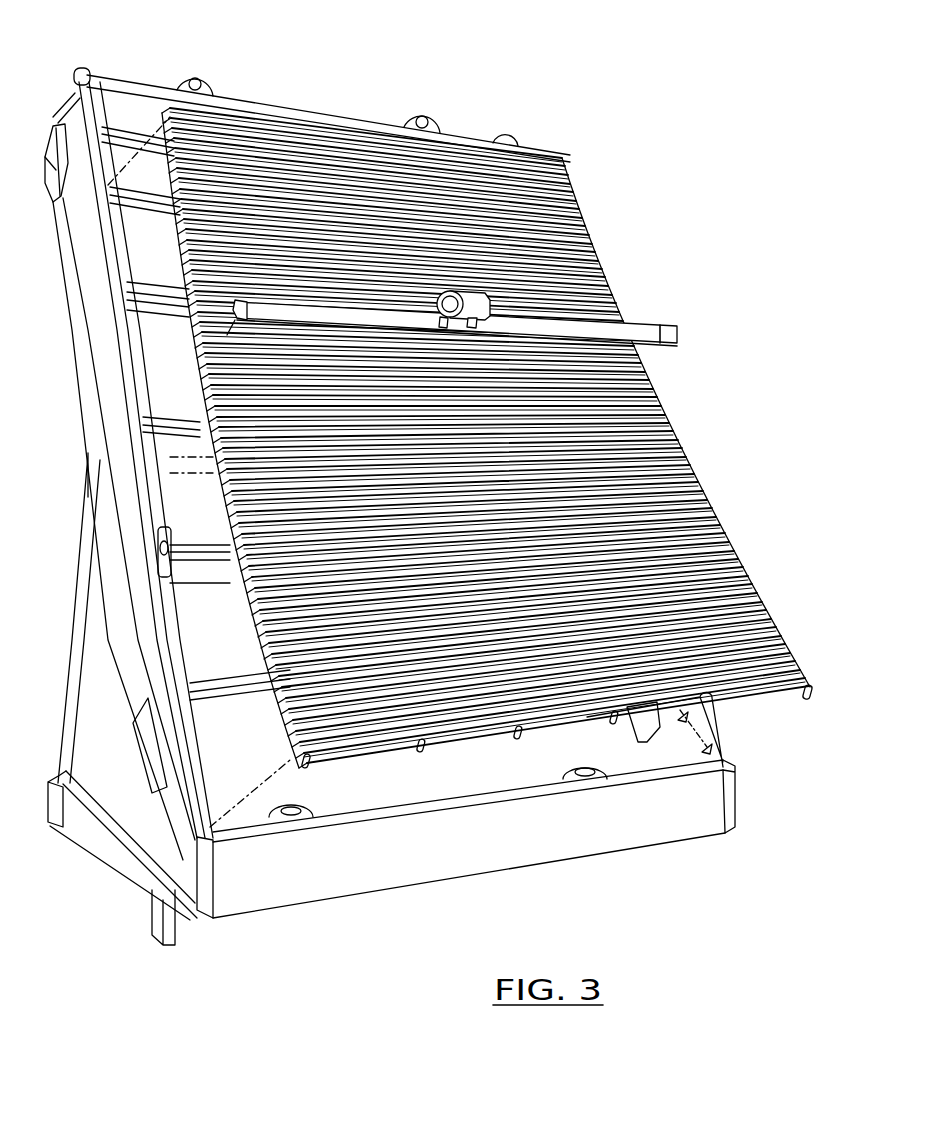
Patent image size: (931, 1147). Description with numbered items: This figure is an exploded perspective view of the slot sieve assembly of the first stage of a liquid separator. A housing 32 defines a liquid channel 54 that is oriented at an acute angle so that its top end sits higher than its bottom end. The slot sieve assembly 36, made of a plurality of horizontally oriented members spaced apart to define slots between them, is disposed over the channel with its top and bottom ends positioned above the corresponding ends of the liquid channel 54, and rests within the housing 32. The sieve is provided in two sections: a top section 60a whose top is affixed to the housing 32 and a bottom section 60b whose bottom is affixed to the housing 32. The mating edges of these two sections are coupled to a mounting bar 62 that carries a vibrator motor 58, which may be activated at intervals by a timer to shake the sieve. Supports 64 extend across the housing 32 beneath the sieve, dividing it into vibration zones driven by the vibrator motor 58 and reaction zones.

The housing 32 is at (98, 303).
The slot sieve assembly 36 is at (499, 413).
The liquid channel 54 is at (517, 763).
The vibrator motor 58 is at (472, 210).
The top section 60a is at (590, 228).
The bottom section 60b is at (670, 427).
The mounting bar 62 is at (367, 310).
The supports 64 is at (157, 193).